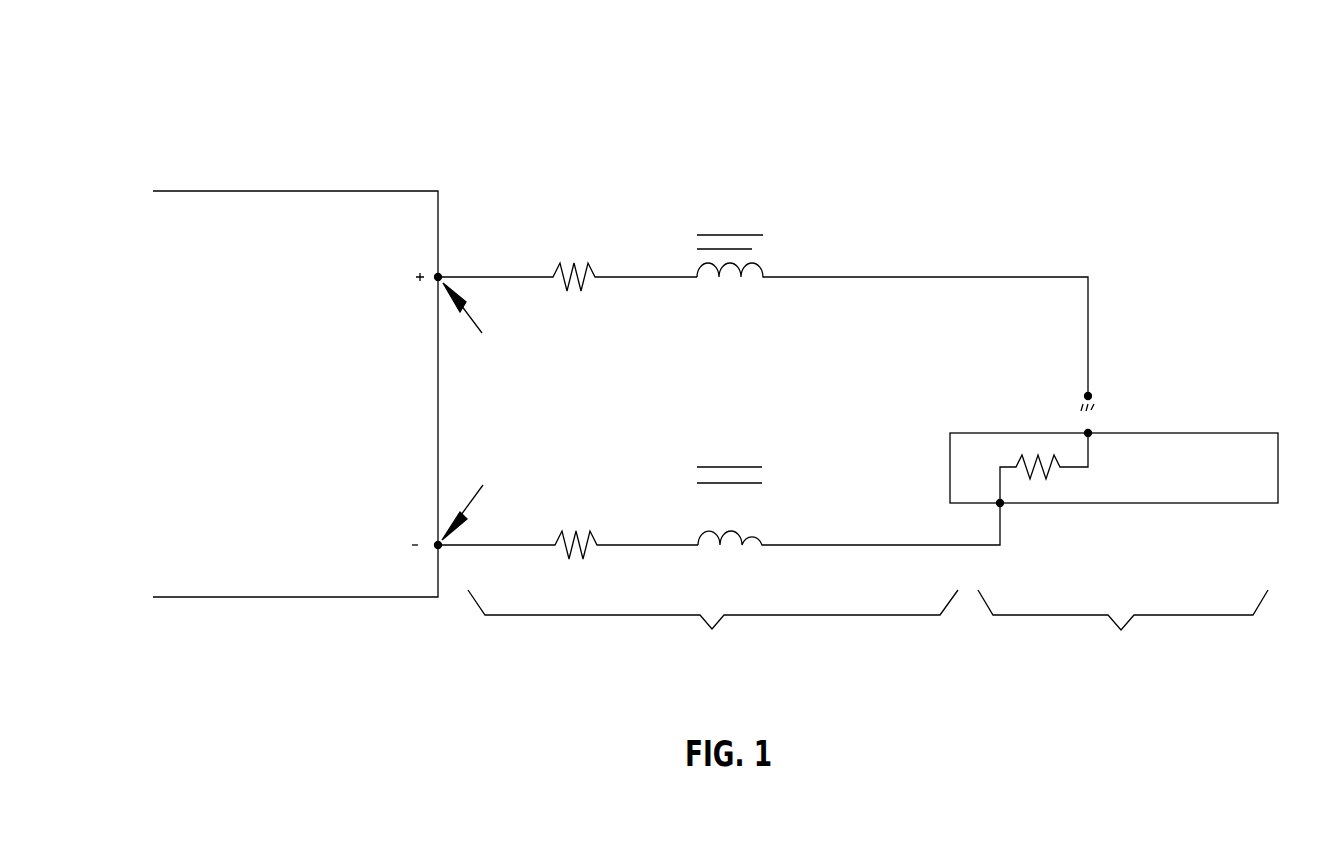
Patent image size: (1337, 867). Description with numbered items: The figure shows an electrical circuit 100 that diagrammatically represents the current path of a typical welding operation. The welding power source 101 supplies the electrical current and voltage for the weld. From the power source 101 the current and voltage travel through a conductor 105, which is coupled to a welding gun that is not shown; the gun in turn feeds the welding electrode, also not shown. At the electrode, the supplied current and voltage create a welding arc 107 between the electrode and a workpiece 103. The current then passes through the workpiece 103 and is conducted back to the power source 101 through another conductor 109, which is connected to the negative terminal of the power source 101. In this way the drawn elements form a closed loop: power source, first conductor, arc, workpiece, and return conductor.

The electrical circuit 100 is at (871, 113).
The welding power source 101 is at (279, 191).
The workpiece 103 is at (1253, 433).
The conductor 105 is at (1033, 277).
The welding arc 107 is at (1094, 406).
The conductor 109 is at (820, 545).